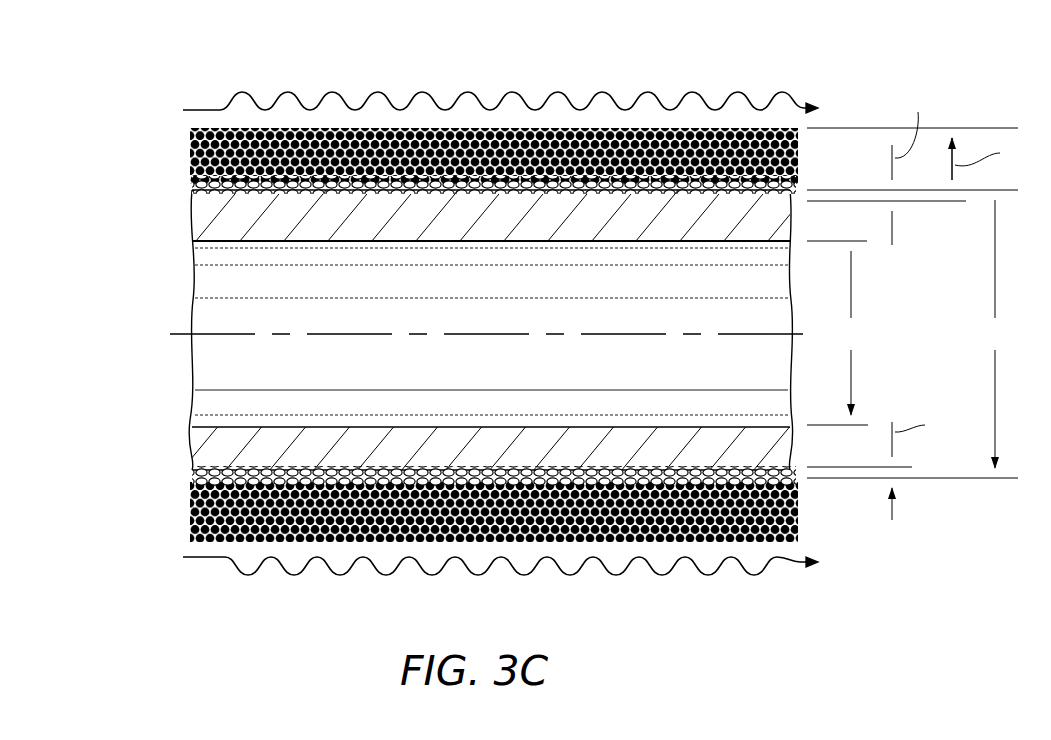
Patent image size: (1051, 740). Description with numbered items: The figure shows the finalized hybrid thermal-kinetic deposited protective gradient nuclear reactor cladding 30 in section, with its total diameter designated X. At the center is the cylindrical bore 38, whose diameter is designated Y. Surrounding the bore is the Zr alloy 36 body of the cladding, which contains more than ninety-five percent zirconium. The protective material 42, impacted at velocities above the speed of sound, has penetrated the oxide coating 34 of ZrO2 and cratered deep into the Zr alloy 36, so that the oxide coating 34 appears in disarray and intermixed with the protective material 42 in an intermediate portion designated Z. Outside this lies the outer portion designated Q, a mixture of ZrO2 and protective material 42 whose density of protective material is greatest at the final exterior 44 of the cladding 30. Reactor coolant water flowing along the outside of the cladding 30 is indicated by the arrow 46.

The nuclear reactor cladding 30 is at (90, 104).
The oxide coating 34 is at (192, 190).
The Zr alloy 36 is at (200, 215).
The cylindrical bore 38 is at (195, 280).
The protective material 42 is at (196, 150).
The final exterior 44 is at (645, 135).
The arrow 46 is at (476, 92).